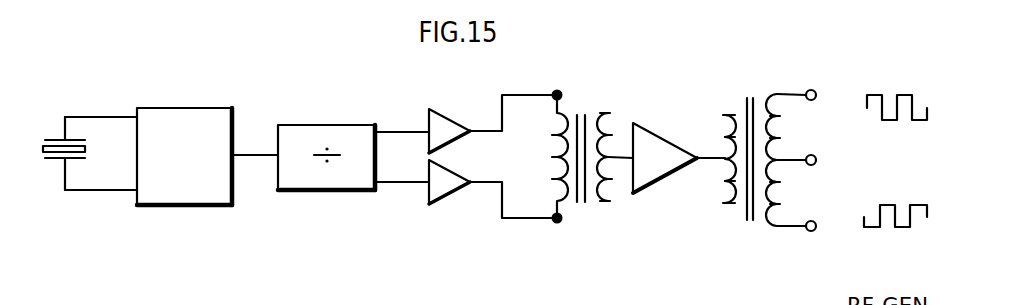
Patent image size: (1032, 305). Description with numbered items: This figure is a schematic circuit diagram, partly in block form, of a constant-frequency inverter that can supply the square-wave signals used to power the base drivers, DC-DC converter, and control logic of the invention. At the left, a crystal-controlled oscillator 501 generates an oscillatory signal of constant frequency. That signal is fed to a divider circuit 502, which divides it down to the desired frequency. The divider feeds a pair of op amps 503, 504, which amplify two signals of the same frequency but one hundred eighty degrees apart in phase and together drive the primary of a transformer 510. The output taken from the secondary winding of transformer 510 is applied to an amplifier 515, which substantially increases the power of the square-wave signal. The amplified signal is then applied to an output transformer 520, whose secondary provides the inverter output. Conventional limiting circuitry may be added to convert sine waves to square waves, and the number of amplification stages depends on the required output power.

The crystal-controlled oscillator 501 is at (182, 108).
The divider circuit 502 is at (326, 125).
The op amp 503 is at (448, 112).
The op amp 504 is at (441, 194).
The transformer 510 is at (588, 108).
The amplifier 515 is at (655, 136).
The output transformer 520 is at (760, 84).